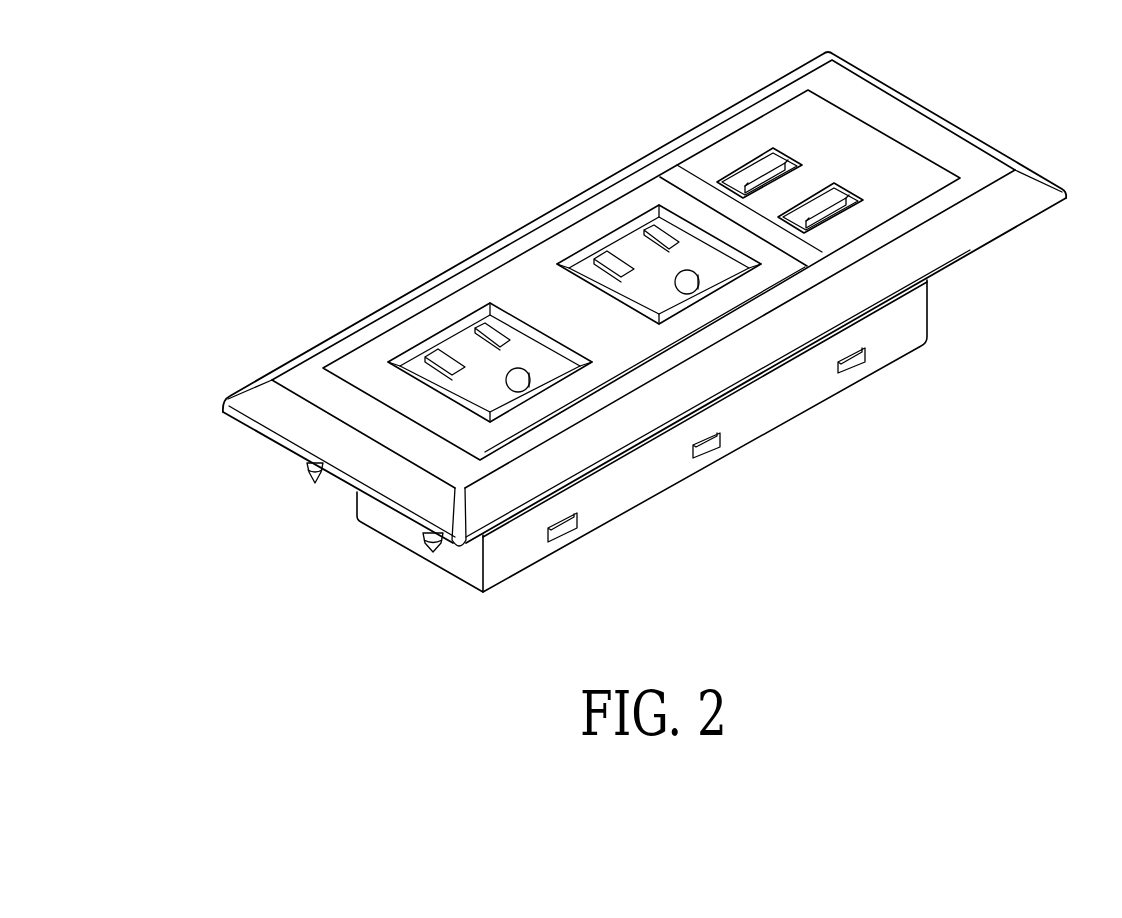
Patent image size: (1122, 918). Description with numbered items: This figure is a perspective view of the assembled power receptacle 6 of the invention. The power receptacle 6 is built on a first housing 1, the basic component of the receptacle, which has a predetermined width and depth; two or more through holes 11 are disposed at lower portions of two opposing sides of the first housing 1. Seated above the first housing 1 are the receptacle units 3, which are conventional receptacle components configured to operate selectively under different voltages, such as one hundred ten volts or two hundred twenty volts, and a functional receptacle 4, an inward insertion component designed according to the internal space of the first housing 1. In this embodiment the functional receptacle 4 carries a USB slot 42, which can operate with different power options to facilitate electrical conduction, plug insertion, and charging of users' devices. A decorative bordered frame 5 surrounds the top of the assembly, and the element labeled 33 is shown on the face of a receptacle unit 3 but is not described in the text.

The first housing 1 is at (467, 565).
The through holes 11 is at (562, 533).
The receptacle units 3 is at (627, 250).
The socket slot 33 is at (447, 365).
The functional receptacles 4 is at (848, 148).
The USB slot 42 is at (743, 177).
The decorative bordered frame 5 is at (305, 380).
The power receptacle 6 is at (1020, 118).